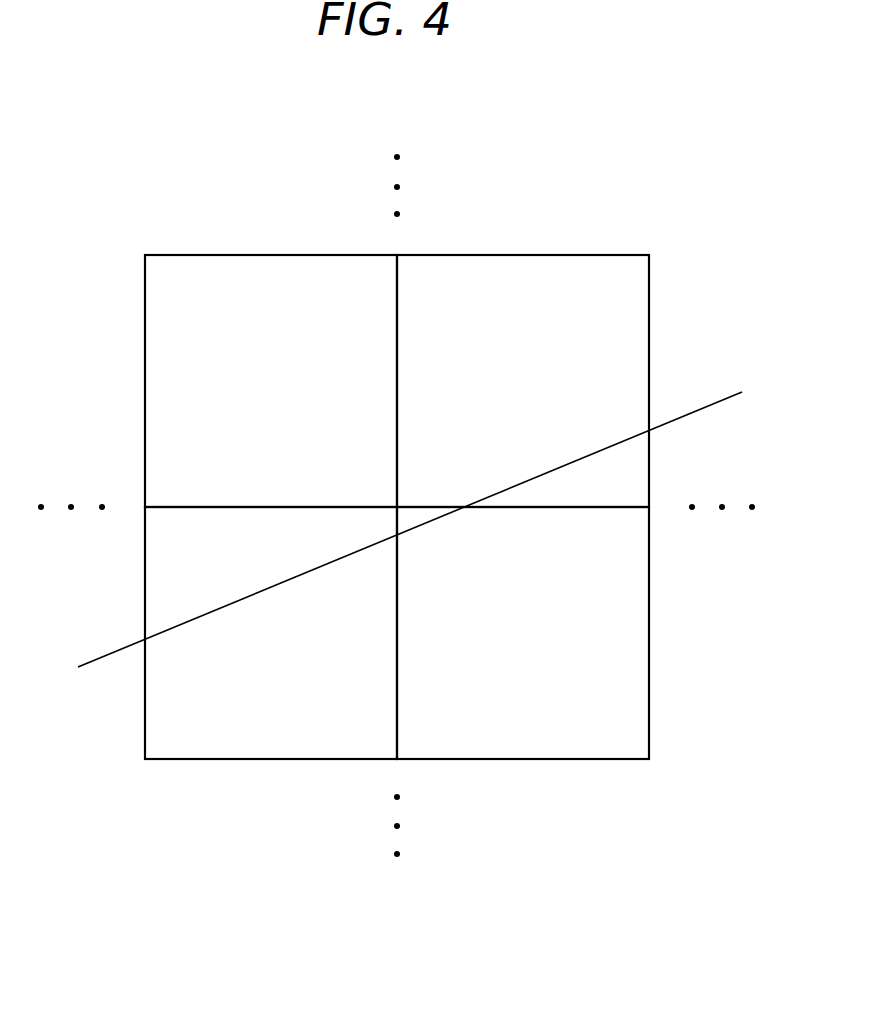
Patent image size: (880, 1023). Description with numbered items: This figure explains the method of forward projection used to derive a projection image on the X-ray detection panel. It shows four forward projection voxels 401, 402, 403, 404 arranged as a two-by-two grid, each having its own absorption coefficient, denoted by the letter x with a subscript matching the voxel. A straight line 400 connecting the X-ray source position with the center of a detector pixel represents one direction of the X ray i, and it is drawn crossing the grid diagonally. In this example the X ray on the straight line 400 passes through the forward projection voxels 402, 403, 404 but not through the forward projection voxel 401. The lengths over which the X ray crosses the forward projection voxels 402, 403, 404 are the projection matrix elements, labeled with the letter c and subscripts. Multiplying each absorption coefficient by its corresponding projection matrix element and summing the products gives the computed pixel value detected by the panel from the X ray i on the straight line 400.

The straight line 400 is at (690, 410).
The forward projection voxel 401 is at (272, 303).
The forward projection voxel 402 is at (525, 303).
The forward projection voxel 403 is at (270, 712).
The forward projection voxel 404 is at (522, 712).